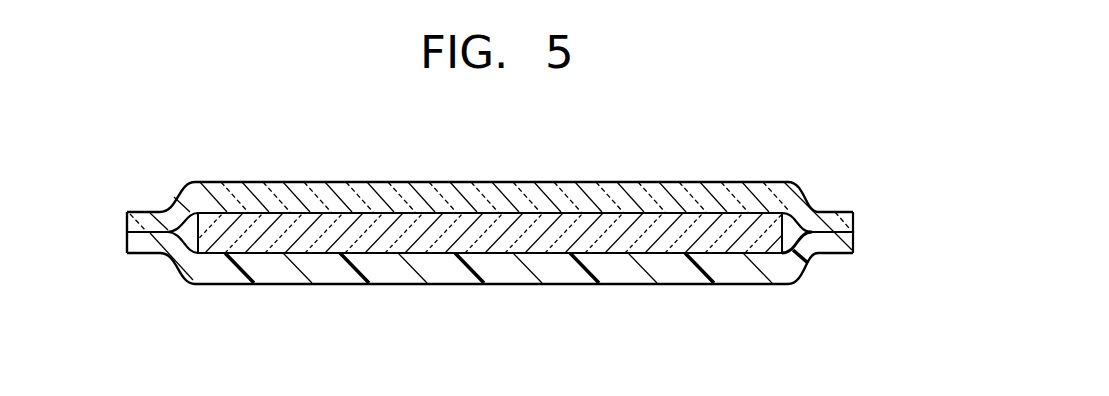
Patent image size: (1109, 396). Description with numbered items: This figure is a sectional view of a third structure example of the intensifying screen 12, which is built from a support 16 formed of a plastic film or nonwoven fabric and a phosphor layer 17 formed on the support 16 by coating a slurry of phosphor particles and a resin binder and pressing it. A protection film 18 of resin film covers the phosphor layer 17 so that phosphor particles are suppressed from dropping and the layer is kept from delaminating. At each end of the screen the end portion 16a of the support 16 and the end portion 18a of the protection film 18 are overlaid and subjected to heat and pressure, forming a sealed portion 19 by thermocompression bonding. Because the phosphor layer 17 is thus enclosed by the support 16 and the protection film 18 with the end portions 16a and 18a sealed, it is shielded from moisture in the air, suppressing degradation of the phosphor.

The intensifying screen 12 is at (773, 149).
The support 16 is at (614, 268).
The end portion of the support 16a is at (853, 240).
The phosphor layer 17 is at (514, 222).
The protection film 18 is at (616, 193).
The end portion of the protection film 18a is at (853, 214).
The sealed portion 19 is at (833, 255).